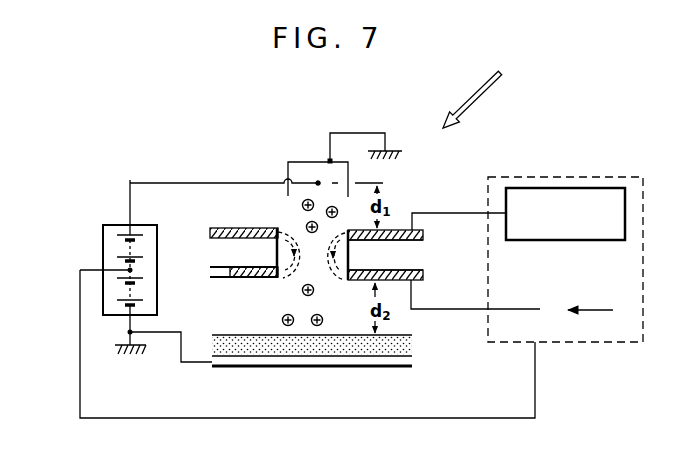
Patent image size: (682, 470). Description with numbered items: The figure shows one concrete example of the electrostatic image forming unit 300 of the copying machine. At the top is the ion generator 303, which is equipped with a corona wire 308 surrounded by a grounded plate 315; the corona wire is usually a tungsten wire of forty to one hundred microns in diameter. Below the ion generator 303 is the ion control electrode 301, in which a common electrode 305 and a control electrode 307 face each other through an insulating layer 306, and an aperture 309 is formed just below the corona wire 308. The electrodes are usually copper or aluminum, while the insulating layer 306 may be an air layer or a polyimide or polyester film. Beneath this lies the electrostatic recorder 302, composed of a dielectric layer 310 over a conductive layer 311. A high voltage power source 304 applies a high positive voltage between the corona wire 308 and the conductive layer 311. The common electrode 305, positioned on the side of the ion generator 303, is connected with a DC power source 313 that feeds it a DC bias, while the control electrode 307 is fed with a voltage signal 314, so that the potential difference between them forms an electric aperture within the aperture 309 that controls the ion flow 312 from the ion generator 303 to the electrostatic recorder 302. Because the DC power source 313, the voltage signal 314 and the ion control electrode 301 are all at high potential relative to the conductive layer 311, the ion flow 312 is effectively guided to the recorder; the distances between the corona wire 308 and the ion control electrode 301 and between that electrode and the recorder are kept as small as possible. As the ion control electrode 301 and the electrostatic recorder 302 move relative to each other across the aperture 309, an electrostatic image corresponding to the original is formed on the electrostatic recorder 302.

The electrostatic image forming unit 300 is at (490, 88).
The ion control electrode 301 is at (417, 229).
The electrostatic recorder 302 is at (423, 364).
The ion generator 303 is at (276, 151).
The high voltage power source 304 is at (103, 243).
The common electrode 305 is at (427, 236).
The insulating layer 306 is at (418, 257).
The control electrode 307 is at (424, 278).
The corona wire 308 is at (317, 181).
The aperture 309 is at (298, 285).
The dielectric layer 310 is at (412, 348).
The conductive layer 311 is at (377, 368).
The ion flow 312 is at (301, 205).
The DC power source 313 is at (578, 188).
The voltage signal 314 is at (597, 312).
The grounded plate 315 is at (339, 161).